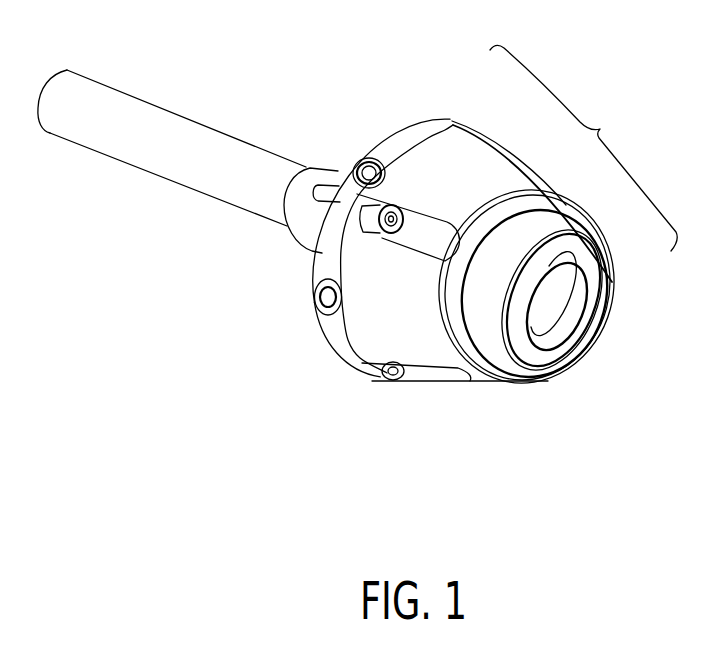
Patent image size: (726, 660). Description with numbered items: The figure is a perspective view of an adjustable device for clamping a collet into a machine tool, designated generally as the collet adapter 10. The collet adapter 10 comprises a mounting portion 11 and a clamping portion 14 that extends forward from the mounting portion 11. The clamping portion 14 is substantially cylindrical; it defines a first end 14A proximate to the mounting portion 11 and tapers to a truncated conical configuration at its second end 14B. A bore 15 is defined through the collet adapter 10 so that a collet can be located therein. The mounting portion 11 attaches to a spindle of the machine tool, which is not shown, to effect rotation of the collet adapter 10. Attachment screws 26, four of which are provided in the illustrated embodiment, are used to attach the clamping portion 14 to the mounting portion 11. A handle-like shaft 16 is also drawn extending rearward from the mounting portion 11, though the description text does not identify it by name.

The collet adapter 10 is at (615, 113).
The mounting portion 11 is at (300, 283).
The clamping portion 14 is at (537, 186).
The first end 14A is at (320, 367).
The second end 14B is at (522, 408).
The bore 15 is at (553, 310).
The handle 16 is at (111, 159).
The attachment screws 26 is at (342, 200).